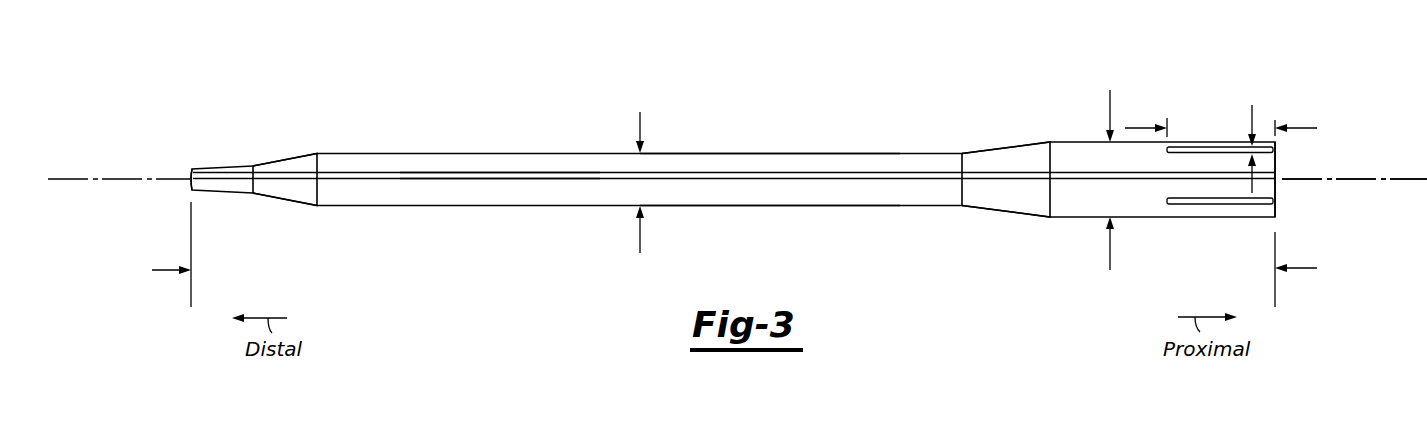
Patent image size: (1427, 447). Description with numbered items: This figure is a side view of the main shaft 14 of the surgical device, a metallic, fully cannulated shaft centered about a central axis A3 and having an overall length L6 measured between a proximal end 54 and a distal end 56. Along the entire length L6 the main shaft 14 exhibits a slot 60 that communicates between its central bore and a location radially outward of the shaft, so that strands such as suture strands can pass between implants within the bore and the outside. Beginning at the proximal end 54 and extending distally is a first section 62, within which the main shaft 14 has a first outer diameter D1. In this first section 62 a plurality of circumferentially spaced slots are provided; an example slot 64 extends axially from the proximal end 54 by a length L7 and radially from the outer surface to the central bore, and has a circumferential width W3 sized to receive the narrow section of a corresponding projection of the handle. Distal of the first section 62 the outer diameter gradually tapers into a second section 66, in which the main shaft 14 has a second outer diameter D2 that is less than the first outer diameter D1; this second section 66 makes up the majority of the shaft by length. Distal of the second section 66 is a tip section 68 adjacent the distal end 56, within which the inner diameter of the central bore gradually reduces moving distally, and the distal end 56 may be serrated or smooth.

The main shaft 14 is at (838, 68).
The proximal end 54 is at (1276, 163).
The distal end 56 is at (191, 177).
The slot 60 is at (493, 171).
The first section 62 is at (1055, 122).
The slot 64 is at (1224, 146).
The second section 66 is at (707, 144).
The tip section 68 is at (284, 137).
The first outer diameter D1 is at (1109, 100).
The second outer diameter D2 is at (639, 112).
The overall length L6 is at (160, 270).
The length L7 is at (1137, 128).
The width W3 is at (1253, 105).
The central axis A3 is at (1346, 181).